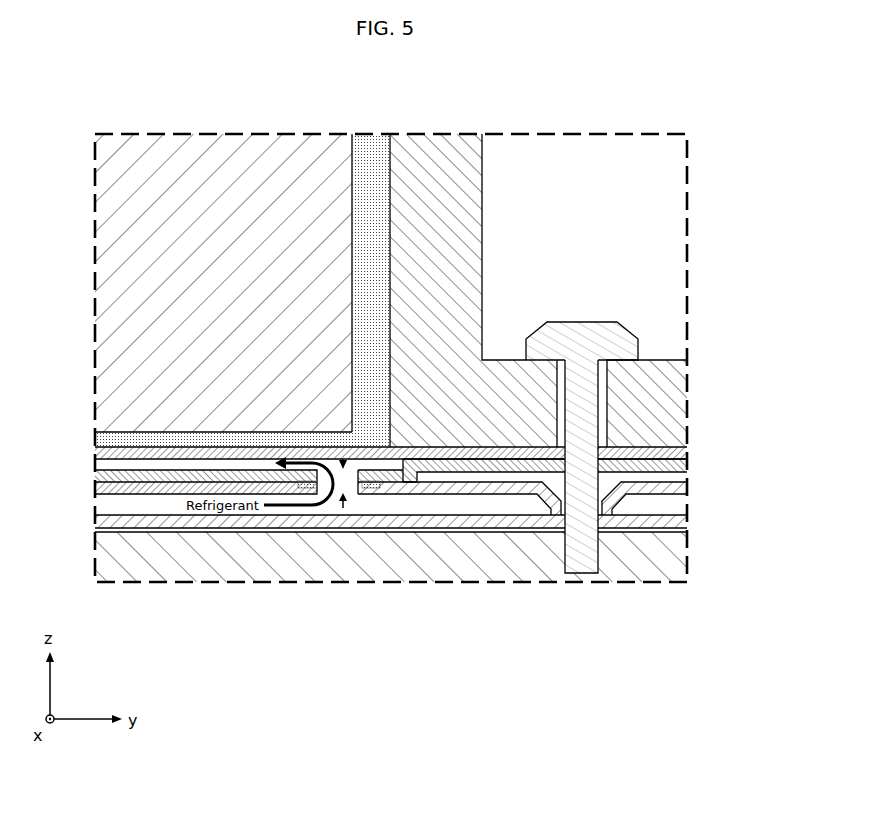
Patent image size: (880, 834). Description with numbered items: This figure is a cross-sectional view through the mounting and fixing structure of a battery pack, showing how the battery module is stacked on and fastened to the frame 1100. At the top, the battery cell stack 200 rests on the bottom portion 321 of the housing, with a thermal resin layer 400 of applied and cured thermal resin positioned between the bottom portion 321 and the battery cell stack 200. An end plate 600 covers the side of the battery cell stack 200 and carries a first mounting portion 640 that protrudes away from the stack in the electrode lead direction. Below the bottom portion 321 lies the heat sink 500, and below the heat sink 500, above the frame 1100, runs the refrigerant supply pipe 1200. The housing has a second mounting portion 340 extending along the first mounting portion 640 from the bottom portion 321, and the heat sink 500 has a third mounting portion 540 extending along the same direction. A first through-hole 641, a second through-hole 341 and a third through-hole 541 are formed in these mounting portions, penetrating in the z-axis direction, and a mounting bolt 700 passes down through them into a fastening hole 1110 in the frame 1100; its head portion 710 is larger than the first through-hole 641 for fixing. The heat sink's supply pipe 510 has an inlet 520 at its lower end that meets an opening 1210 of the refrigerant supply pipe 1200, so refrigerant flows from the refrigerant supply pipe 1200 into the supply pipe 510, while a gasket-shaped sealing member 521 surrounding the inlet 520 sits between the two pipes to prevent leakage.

The battery cell stack 200 is at (243, 168).
The end plate 600 is at (432, 165).
The first mounting portion 640 is at (500, 382).
The first through-hole 641 is at (607, 374).
The head portion 710 is at (628, 335).
The mounting bolt 700 is at (585, 565).
The thermal resin layer 400 is at (97, 440).
The bottom portion 321 is at (97, 452).
The second through-hole 341 is at (607, 452).
The second mounting portion 340 is at (680, 466).
The inlet 520 is at (343, 458).
The sealing member 521 is at (305, 488).
The heat sink 500 is at (445, 494).
The supply pipe 510 is at (400, 497).
The third mounting portion 540 is at (680, 487).
The third through-hole 541 is at (600, 504).
The refrigerant supply pipe 1200 is at (100, 487).
The opening 1210 is at (343, 500).
The frame 1100 is at (205, 560).
The fastening hole 1110 is at (565, 548).